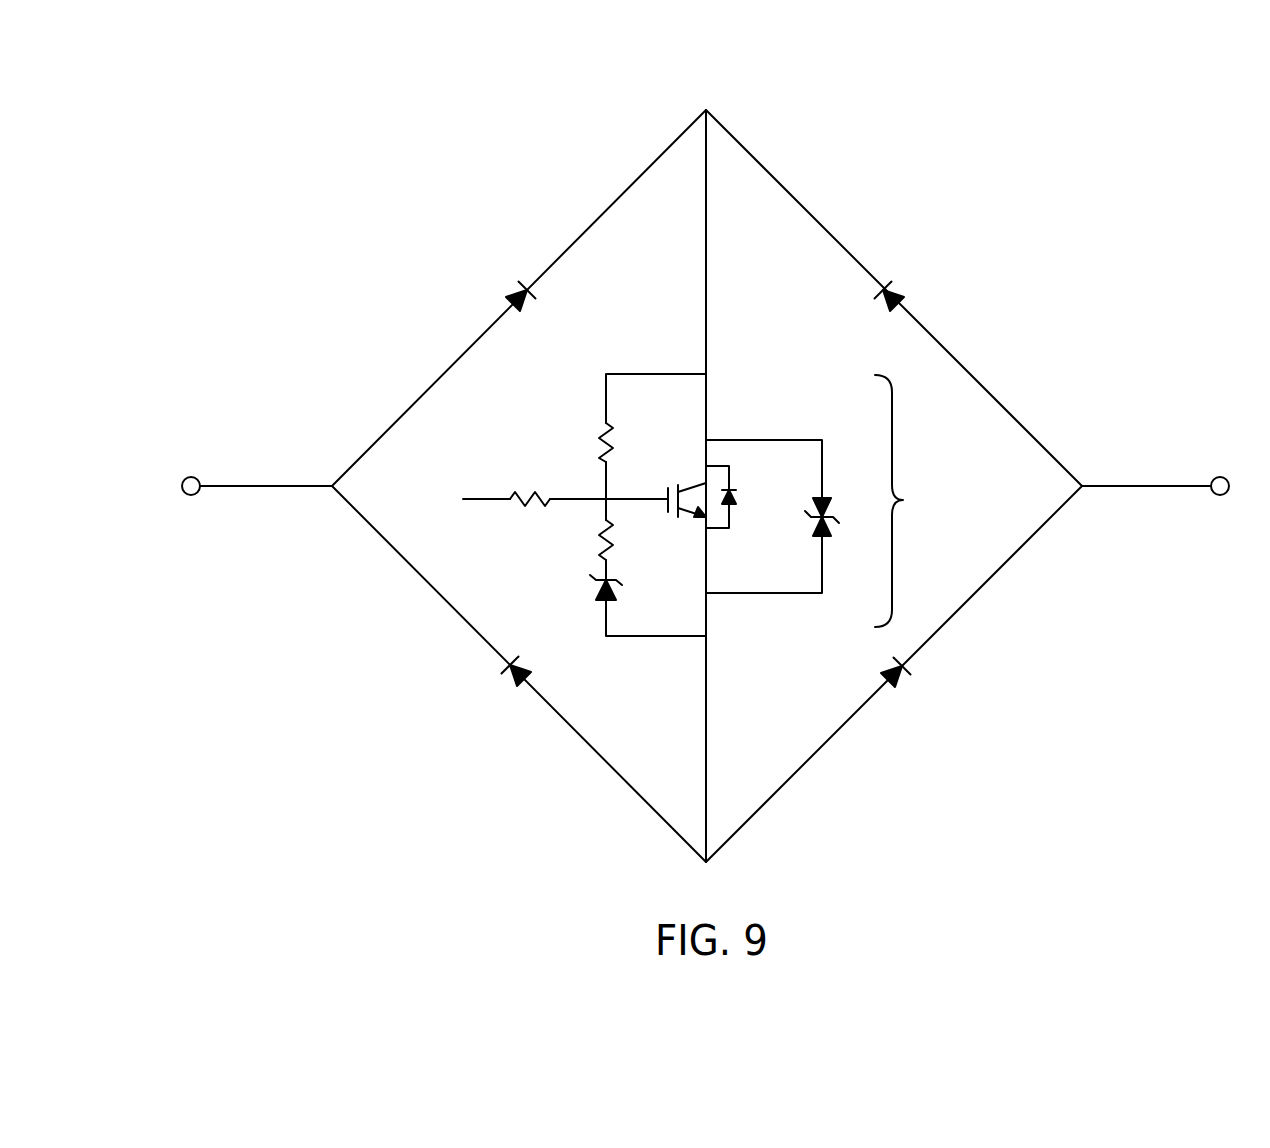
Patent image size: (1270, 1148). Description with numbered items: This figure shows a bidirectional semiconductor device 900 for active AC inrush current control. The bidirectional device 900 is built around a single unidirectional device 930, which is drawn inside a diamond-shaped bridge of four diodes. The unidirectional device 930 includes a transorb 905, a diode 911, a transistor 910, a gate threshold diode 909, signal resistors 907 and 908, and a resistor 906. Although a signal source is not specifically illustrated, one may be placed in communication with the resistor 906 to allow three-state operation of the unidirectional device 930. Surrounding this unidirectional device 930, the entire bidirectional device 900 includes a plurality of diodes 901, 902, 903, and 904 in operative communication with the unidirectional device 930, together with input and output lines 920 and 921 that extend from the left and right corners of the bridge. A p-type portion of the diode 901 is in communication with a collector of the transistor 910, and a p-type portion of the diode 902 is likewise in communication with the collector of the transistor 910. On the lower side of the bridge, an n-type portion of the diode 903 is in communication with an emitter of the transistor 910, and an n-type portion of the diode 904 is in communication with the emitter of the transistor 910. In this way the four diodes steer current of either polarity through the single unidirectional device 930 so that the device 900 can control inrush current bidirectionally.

The bidirectional semiconductor device 900 is at (711, 475).
The diode 901 is at (518, 292).
The diode 902 is at (895, 290).
The diode 903 is at (513, 674).
The diode 904 is at (903, 672).
The transorb 905 is at (823, 500).
The resistor 906 is at (515, 497).
The signal resistor 907 is at (600, 432).
The signal resistor 908 is at (600, 546).
The gate threshold diode 909 is at (600, 590).
The transistor 910 is at (678, 490).
The diode 911 is at (735, 496).
The input and output line 920 is at (1220, 477).
The input and output line 921 is at (191, 477).
The unidirectional device 930 is at (712, 505).